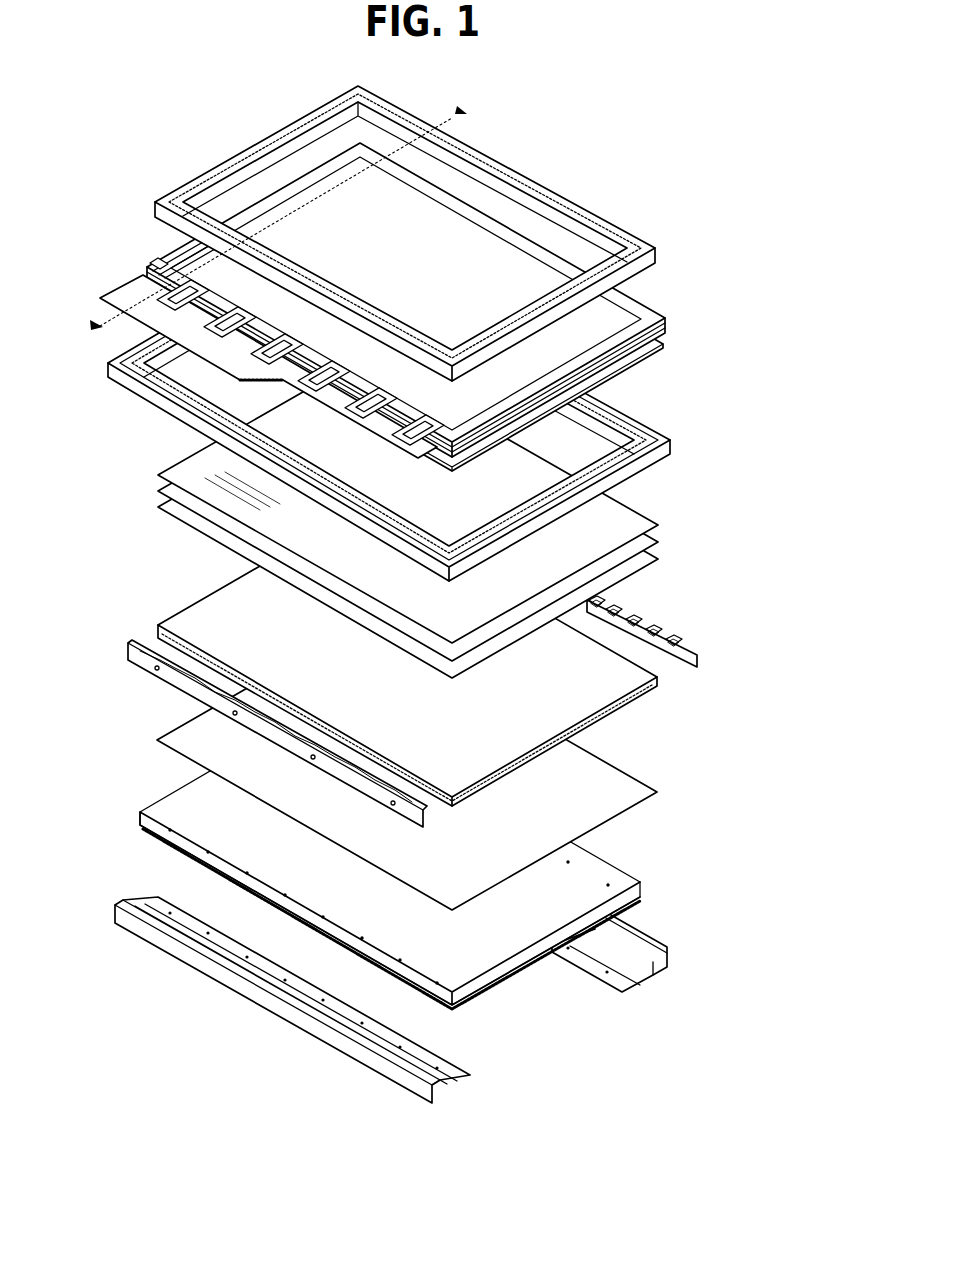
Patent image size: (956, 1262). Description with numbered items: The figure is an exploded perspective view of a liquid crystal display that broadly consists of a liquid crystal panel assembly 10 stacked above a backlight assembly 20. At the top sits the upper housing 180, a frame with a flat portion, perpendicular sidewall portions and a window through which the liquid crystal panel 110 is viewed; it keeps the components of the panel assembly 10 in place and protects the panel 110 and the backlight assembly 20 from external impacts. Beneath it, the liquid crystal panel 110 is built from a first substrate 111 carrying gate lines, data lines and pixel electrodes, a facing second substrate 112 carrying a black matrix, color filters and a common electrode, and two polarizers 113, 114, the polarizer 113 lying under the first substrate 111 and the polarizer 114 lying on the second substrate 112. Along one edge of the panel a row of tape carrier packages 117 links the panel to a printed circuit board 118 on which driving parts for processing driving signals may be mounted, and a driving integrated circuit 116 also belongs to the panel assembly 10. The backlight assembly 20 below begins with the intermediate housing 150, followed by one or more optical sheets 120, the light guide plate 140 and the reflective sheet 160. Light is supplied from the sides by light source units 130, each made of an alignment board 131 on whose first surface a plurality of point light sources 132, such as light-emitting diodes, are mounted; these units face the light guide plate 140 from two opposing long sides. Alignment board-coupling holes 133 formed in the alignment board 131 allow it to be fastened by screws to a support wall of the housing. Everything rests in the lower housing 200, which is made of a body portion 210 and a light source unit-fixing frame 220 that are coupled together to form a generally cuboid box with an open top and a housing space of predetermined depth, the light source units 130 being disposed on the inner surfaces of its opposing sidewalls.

The liquid crystal panel assembly 10 is at (462, 278).
The backlight assembly 20 is at (471, 609).
The liquid crystal panel 110 is at (467, 300).
The first substrate 111 is at (657, 322).
The second substrate 112 is at (648, 312).
The polarizer 113 is at (657, 334).
The polarizer 114 is at (641, 300).
The driving integrated circuit 116 is at (628, 352).
The tape carrier package 117 is at (158, 262).
The printed circuit board 118 is at (125, 292).
The optical sheets 120 is at (152, 468).
The light source units 130 is at (700, 631).
The alignment board 131 is at (690, 655).
The point light sources 132 is at (672, 636).
The alignment board-coupling holes 133 is at (150, 667).
The light guide plate 140 is at (630, 683).
The intermediate housing 150 is at (433, 412).
The reflective sheet 160 is at (626, 794).
The upper housing 180 is at (652, 250).
The lower housing 200 is at (467, 902).
The body portion 210 is at (616, 856).
The light source unit-fixing frame 220 is at (684, 957).